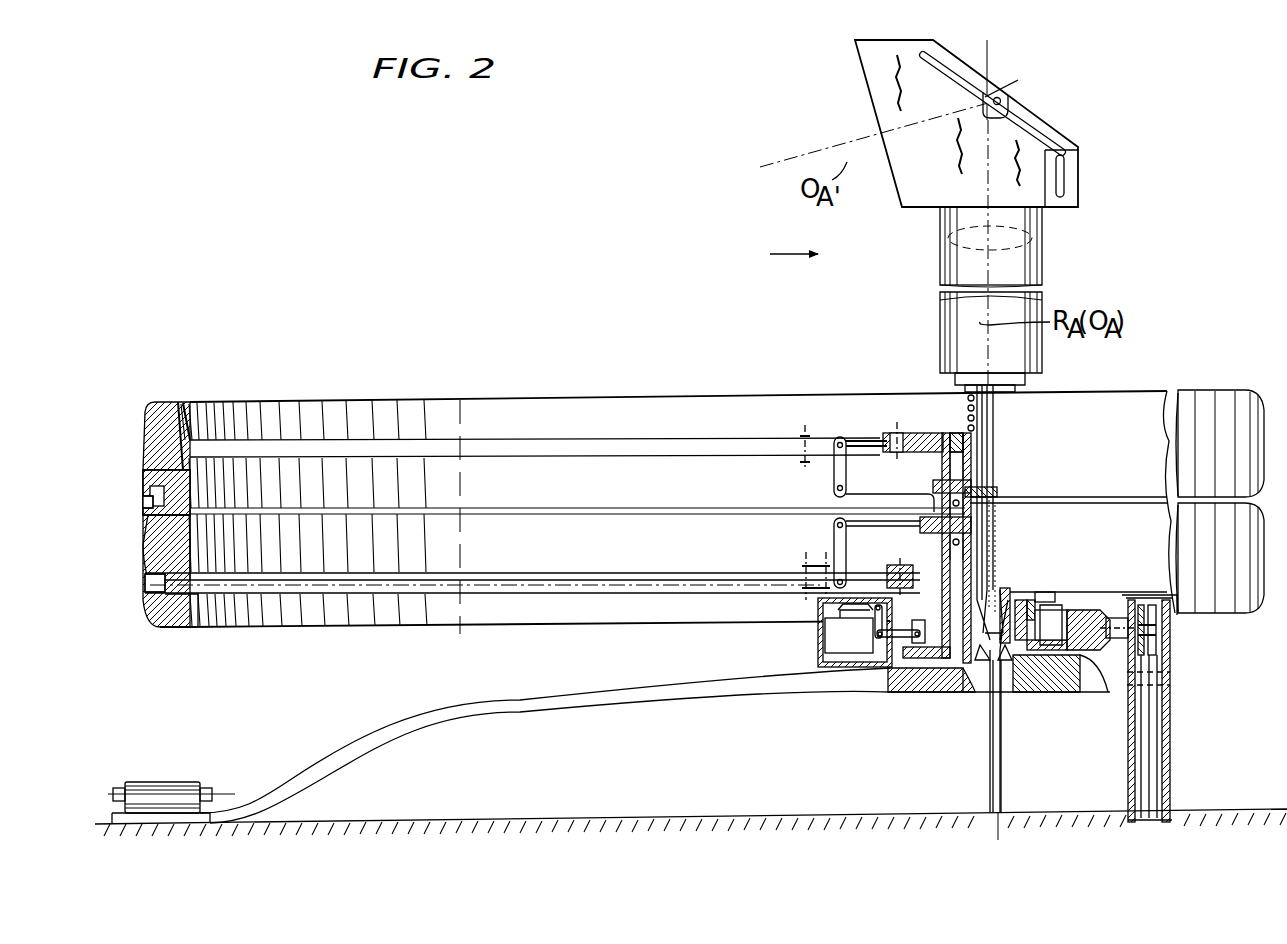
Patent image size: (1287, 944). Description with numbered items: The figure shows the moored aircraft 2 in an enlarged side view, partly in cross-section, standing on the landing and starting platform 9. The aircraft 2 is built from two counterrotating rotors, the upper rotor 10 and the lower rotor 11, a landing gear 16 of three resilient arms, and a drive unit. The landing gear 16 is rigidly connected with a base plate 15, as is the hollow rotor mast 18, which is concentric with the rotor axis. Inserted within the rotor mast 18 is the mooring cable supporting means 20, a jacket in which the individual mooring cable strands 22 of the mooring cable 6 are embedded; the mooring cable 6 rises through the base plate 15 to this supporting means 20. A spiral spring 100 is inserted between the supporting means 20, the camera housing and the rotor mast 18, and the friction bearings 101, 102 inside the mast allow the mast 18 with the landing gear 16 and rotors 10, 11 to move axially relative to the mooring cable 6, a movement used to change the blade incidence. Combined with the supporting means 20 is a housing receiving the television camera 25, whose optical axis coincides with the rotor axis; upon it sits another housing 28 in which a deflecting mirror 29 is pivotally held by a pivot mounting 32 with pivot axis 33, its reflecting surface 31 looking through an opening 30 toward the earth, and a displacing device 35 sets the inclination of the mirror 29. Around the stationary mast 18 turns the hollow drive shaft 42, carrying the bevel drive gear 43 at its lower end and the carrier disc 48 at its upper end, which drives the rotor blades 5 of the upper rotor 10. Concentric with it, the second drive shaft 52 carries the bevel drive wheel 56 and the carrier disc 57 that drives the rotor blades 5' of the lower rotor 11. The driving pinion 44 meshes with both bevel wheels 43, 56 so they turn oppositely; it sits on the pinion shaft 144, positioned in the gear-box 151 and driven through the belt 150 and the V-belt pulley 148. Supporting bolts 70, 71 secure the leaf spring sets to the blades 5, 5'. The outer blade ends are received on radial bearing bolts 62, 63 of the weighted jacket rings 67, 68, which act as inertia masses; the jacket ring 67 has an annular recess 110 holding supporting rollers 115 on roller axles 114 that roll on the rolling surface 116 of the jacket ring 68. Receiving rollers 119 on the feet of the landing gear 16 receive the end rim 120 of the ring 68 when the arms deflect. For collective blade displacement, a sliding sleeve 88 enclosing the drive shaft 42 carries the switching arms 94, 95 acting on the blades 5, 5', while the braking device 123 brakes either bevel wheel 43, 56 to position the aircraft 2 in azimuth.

The aircraft 2 is at (532, 246).
The rotor blades 5 is at (535, 429).
The rotor blades 5' is at (555, 588).
The mooring cable 6 is at (990, 765).
The landing and starting platform 9 is at (717, 818).
The upper rotor 10 is at (283, 353).
The lower rotor 11 is at (356, 641).
The base plate 15 is at (1088, 695).
The landing gear 16 is at (631, 711).
The rotor mast 18 is at (975, 585).
The mooring cable supporting means 20 is at (982, 660).
The mooring cable strands 22 is at (982, 447).
The television camera 25 is at (1036, 260).
The housing 28 is at (945, 48).
The deflecting mirror 29 is at (1024, 128).
The opening 30 is at (858, 62).
The reflecting surface 31 is at (945, 86).
The pivot mounting 32 is at (988, 92).
The pivot axis 33 is at (1007, 102).
The displacing device 35 is at (1064, 173).
The drive shaft 42 is at (971, 494).
The bevel drive gear 43 is at (1054, 655).
The driving pinion 44 is at (1108, 650).
The carrier disc 48 is at (915, 430).
The second drive shaft 52 is at (968, 550).
The bevel drive wheel 56 is at (1065, 604).
The carrier disc 57 is at (907, 565).
The bearing bolt 62 is at (188, 440).
The bearing bolt 63 is at (154, 596).
The jacket ring 67 is at (164, 402).
The jacket ring 68 is at (200, 621).
The supporting bolt 70 is at (796, 438).
The supporting bolt 71 is at (802, 590).
The sliding sleeve 88 is at (925, 478).
The switching arm 94 is at (834, 488).
The switching arm 95 is at (860, 527).
The spiral spring 100 is at (968, 394).
The friction bearing 101 is at (980, 435).
The friction bearing 102 is at (1003, 586).
The annular recess 110 is at (148, 478).
The roller axle 114 is at (144, 509).
The supporting roller 115 is at (150, 491).
The rolling surface 116 is at (148, 529).
The receiving roller 119 is at (173, 782).
The end rim 120 is at (155, 631).
The braking device 123 is at (798, 644).
The pinion shaft 144 is at (1126, 597).
The V-belt pulley 148 is at (1156, 625).
The belt 150 is at (1165, 732).
The gear-box 151 is at (1168, 775).